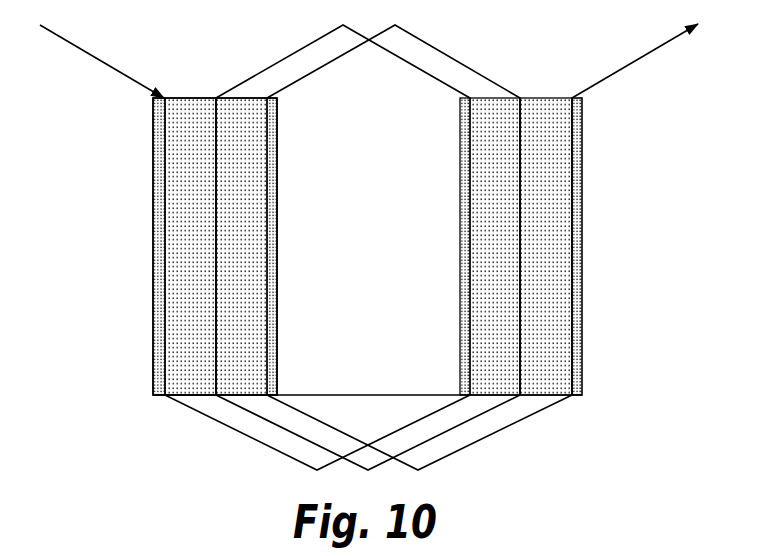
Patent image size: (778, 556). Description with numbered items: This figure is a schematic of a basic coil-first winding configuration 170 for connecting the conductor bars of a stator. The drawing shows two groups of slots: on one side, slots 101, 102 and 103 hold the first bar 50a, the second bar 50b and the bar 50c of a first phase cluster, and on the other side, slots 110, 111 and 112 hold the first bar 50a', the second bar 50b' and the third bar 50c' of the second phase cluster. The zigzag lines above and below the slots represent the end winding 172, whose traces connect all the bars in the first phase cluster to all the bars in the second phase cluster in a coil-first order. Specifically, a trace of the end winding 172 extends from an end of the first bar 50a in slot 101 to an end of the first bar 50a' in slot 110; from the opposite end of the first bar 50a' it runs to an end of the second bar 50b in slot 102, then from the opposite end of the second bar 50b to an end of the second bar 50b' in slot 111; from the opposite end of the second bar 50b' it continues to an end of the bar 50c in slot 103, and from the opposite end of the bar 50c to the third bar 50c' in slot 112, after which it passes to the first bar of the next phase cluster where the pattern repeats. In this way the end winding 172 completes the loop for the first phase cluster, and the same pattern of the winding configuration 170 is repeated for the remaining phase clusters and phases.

The end winding 172 is at (72, 47).
The slot 101 is at (191, 98).
The first bar 50a is at (110, 246).
The second bar 50b is at (158, 246).
The slot 102 is at (216, 317).
The bar 50c is at (282, 246).
The slot 103 is at (277, 152).
The first bar 50a' is at (426, 246).
The slot 110 is at (488, 117).
The second bar 50b' is at (581, 246).
The slot 111 is at (547, 102).
The third bar 50c' is at (624, 246).
The slot 112 is at (582, 353).
The winding configuration 170 is at (686, 238).